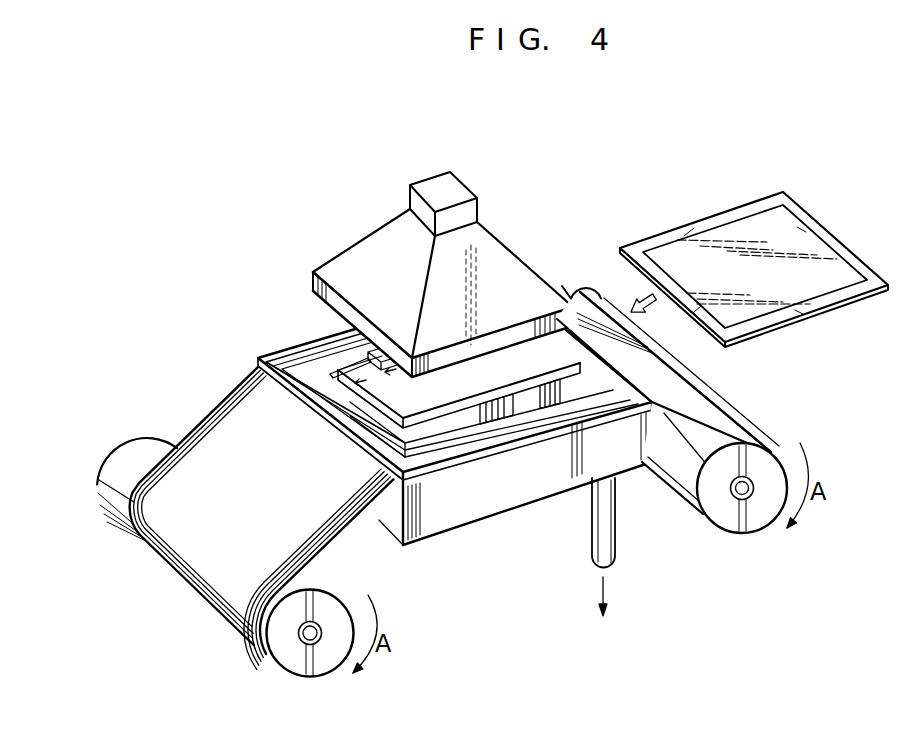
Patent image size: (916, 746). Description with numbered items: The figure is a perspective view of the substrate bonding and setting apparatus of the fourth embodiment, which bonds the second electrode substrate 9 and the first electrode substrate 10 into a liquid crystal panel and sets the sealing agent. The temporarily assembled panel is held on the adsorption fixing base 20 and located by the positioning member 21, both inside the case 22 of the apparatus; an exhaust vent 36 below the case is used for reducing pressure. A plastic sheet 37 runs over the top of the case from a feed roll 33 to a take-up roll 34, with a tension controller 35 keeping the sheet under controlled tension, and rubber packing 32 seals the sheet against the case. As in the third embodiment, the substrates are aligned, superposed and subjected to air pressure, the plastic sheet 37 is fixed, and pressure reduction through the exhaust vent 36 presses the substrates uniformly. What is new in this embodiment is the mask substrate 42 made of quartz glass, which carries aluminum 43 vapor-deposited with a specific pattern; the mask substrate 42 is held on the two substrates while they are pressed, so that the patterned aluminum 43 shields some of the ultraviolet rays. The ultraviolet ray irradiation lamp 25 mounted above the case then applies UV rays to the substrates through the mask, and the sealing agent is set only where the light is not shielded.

The second electrode substrate 9 is at (378, 360).
The first electrode substrate 10 is at (468, 418).
The adsorption fixing base 20 is at (508, 425).
The positioning member 21 is at (340, 358).
The case 22 is at (568, 470).
The ultraviolet ray irradiation lamp 25 is at (497, 250).
The rubber packing 32 is at (620, 382).
The feed roll 33 is at (312, 677).
The take-up roll 34 is at (745, 533).
The tension controller 35 is at (586, 294).
The exhaust vent 36 is at (616, 537).
The plastic sheet 37 is at (235, 412).
The mask substrate 42 is at (843, 303).
The aluminum vapor-deposited with a specific pattern 43 is at (812, 246).